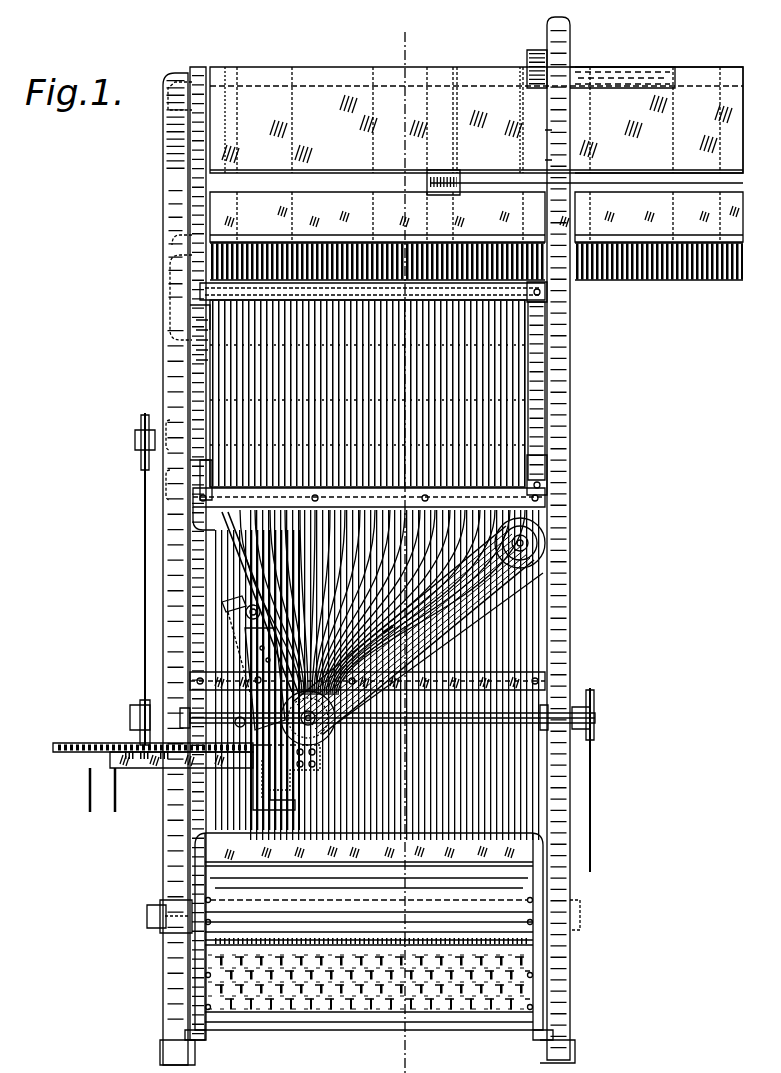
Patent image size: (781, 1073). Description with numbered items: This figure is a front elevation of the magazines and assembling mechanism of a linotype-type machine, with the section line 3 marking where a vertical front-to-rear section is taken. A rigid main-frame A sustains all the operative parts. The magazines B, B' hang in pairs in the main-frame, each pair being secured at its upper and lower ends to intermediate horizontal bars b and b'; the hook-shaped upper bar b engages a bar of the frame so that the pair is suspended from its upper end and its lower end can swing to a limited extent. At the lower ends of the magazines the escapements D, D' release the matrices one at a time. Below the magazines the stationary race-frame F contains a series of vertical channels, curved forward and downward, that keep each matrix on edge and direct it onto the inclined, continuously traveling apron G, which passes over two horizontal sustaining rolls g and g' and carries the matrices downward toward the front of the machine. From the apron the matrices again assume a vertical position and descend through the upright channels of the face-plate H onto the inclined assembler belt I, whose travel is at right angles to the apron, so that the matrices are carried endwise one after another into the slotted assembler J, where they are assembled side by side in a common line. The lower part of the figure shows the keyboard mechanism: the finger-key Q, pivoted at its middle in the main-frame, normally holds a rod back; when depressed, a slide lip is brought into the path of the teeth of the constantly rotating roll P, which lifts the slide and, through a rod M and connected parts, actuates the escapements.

The section line 3 is at (402, 541).
The main-frame A is at (165, 325).
The magazine B is at (476, 122).
The magazine B' is at (659, 120).
The upper horizontal bar b is at (586, 212).
The lower horizontal bar b' is at (377, 217).
The escapement D is at (372, 252).
The escapement D' is at (659, 272).
The sustaining roll g is at (560, 295).
The apron G is at (560, 345).
The sustaining roll g' is at (562, 475).
The race-frame F is at (215, 372).
The face-plate H is at (373, 602).
The assembler belt I is at (420, 595).
The rod M is at (520, 782).
The assembler J is at (258, 772).
The roll P is at (144, 916).
The finger-key Q is at (335, 1010).